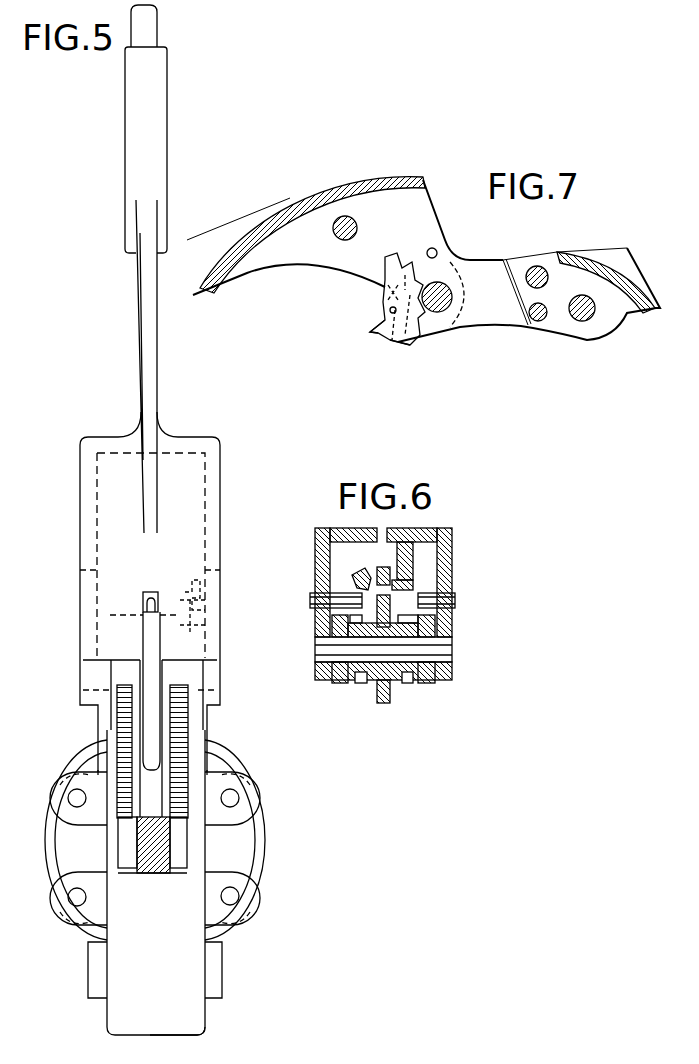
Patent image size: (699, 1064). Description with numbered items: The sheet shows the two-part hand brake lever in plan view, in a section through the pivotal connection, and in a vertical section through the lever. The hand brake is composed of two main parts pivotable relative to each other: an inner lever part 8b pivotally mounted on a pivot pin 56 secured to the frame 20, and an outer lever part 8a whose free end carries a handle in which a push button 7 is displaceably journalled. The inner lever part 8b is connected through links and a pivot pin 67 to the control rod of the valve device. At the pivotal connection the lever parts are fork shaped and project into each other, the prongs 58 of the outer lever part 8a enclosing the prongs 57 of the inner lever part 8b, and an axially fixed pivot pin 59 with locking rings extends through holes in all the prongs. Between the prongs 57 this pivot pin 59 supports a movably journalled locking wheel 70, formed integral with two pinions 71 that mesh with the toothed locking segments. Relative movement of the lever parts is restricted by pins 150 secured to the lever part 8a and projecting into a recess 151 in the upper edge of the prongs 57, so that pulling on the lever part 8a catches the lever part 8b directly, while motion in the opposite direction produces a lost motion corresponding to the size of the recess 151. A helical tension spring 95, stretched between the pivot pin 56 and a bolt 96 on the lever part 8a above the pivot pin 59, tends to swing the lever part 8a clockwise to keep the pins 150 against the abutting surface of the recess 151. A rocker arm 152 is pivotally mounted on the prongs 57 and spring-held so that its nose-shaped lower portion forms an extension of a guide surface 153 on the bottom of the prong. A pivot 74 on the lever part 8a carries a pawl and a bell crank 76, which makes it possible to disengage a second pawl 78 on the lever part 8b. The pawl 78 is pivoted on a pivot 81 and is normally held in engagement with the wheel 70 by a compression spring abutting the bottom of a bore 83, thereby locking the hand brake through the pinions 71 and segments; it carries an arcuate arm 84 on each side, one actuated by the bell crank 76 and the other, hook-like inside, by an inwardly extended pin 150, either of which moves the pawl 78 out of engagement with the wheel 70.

In FIG. 5, the push button 7 is at (150, 35).
In FIG. 5, the outer lever part 8a is at (139, 328).
In FIG. 7, the outer lever part 8a is at (213, 230).
In FIG. 7, the inner lever part 8b is at (645, 313).
In FIG. 5, the frame 20 is at (206, 1034).
In FIG. 5, the pivot pin 56 is at (212, 973).
In FIG. 5, the prongs of lever part 8b 57 is at (200, 717).
In FIG. 7, the prongs of lever part 8b 57 is at (472, 325).
In FIG. 6, the prongs of lever part 8b 57 is at (338, 684).
In FIG. 7, the prongs of lever part 8a 58 is at (418, 208).
In FIG. 6, the prongs of lever part 8a 58 is at (315, 553).
In FIG. 7, the pivot pin 59 is at (443, 302).
In FIG. 6, the pivot pin 59 is at (446, 645).
In FIG. 7, the pivot pin 67 is at (577, 318).
In FIG. 6, the locking wheel 70 is at (383, 704).
In FIG. 6, the pinions 71 is at (361, 684).
In FIG. 7, the pivot 74 is at (333, 229).
In FIG. 6, the bell crank 76 is at (405, 575).
In FIG. 6, the pawl 78 is at (386, 568).
In FIG. 7, the pivot 81 is at (532, 267).
In FIG. 7, the bore 83 is at (545, 306).
In FIG. 6, the arcuate arm 84 is at (360, 574).
In FIG. 5, the helical tension spring 95 is at (160, 850).
In FIG. 5, the bolt 96 is at (212, 626).
In FIG. 7, the pins 150 is at (418, 247).
In FIG. 6, the pins 150 is at (326, 600).
In FIG. 7, the recess 151 is at (387, 262).
In FIG. 6, the recess 151 is at (336, 618).
In FIG. 5, the rocker arm 152 is at (196, 592).
In FIG. 7, the rocker arm 152 is at (373, 340).
In FIG. 7, the guide surface 153 is at (392, 346).